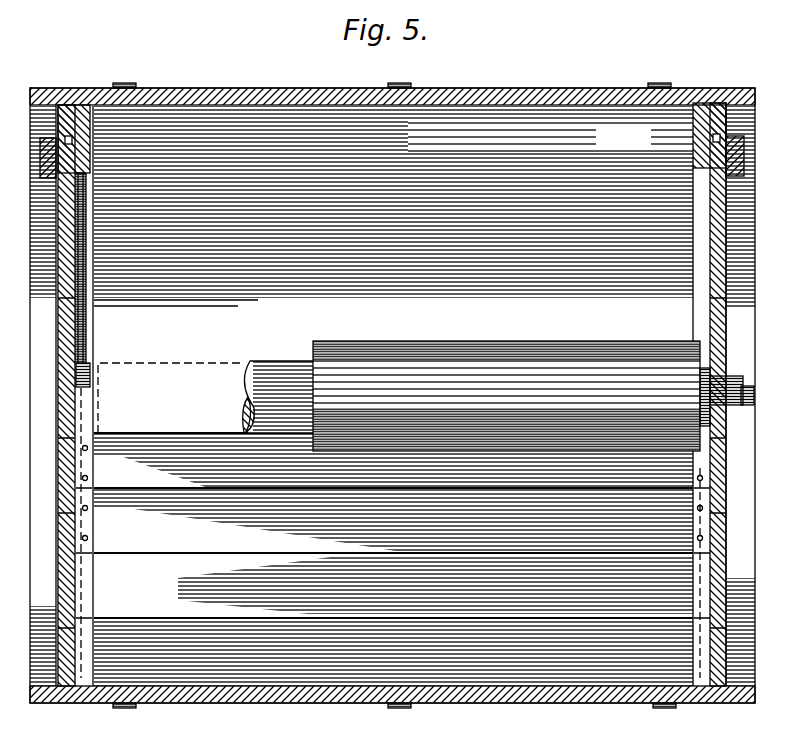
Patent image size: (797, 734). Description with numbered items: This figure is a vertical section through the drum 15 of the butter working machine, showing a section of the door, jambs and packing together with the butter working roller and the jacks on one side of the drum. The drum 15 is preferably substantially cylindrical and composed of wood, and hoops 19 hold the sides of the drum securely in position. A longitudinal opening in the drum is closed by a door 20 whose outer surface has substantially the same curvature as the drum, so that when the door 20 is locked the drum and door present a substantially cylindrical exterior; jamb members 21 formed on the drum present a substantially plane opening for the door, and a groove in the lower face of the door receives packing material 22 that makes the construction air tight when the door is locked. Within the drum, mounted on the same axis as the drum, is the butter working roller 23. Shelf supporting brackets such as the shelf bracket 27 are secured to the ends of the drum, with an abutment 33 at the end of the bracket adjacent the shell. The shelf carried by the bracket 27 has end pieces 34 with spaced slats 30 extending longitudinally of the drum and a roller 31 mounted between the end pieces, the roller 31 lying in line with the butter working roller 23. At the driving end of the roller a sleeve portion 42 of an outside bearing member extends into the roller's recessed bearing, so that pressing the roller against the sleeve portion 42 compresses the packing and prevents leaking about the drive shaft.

The drum 15 is at (40, 441).
The hoops 19 is at (117, 699).
The door 20 is at (178, 94).
The jamb members 21 is at (393, 206).
The packing material 22 is at (60, 128).
The butter working roller 23 is at (528, 368).
The shelf bracket 27 is at (739, 388).
The slats 30 is at (393, 559).
The roller 31 is at (236, 376).
The abutment 33 is at (78, 672).
The end pieces 34 is at (86, 410).
The sleeve portion 42 is at (716, 378).